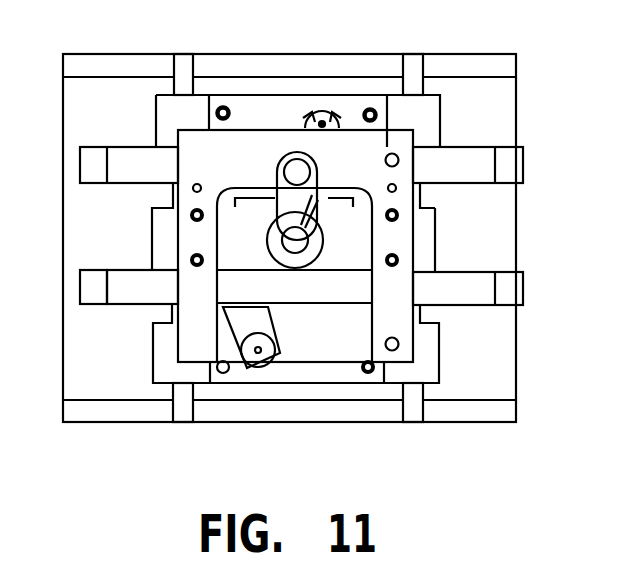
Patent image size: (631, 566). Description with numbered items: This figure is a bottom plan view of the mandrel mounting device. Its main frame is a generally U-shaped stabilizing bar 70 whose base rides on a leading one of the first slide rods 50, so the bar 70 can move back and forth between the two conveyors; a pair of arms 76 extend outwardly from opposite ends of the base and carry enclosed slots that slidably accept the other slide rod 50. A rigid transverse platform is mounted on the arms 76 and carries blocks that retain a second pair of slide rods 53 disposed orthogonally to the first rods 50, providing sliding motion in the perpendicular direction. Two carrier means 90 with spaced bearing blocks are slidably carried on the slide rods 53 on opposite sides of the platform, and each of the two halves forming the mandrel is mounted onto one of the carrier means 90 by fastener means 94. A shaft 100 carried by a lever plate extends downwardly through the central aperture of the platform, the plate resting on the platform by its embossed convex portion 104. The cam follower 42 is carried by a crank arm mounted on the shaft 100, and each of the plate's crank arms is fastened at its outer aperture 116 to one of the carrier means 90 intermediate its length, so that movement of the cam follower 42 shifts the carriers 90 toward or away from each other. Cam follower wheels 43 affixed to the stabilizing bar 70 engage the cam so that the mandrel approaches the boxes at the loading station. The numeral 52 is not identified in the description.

The cam follower 42 is at (298, 172).
The cam followers 43 is at (399, 160).
The slide rods 50 is at (147, 295).
The arm end cap 52 is at (93, 285).
The second pair of slide rods 53 is at (410, 83).
The stabilizing bar 70 is at (221, 168).
The arms 76 is at (400, 236).
The carrier means 90 is at (294, 372).
The fastener means 94 is at (226, 107).
The shaft 100 is at (290, 246).
The convex portion 104 is at (353, 237).
The aperture 116 is at (333, 108).